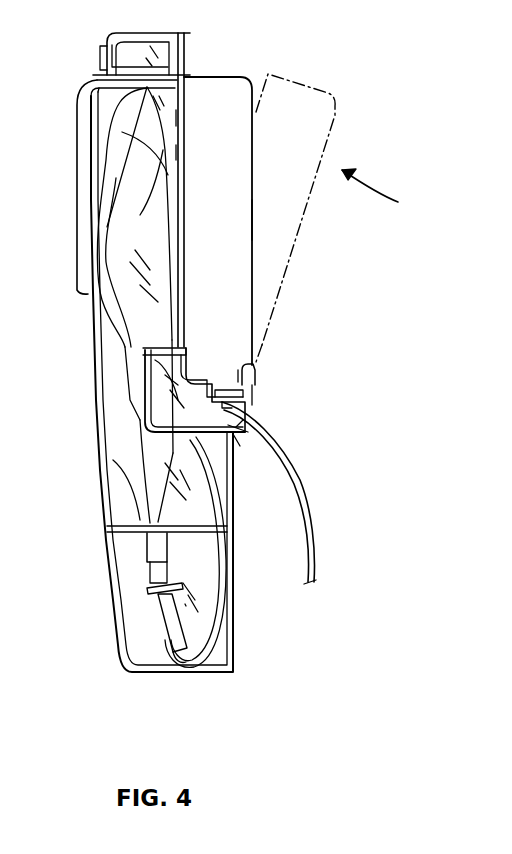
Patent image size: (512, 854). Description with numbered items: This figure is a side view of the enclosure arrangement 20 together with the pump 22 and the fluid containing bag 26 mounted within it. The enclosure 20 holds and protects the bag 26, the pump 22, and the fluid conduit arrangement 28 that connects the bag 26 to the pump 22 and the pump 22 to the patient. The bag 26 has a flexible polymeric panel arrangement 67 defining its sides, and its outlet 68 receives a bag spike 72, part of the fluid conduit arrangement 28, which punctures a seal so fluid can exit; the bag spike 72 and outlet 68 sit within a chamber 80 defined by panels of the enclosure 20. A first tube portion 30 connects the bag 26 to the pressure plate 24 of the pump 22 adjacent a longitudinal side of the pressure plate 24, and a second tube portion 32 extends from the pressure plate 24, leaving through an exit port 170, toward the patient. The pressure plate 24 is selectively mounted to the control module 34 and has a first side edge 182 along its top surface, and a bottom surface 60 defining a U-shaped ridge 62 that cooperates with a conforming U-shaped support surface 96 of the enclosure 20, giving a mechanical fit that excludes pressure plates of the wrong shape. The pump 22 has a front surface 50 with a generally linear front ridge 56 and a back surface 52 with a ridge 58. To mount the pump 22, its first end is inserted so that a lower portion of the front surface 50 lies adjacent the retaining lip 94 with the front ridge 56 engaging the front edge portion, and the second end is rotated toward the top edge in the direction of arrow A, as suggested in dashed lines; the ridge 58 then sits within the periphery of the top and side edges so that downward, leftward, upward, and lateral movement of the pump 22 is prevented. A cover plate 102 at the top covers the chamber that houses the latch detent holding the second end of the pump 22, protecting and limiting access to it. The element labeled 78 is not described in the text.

The enclosure arrangement 20 is at (232, 672).
The pump 22 is at (236, 78).
The pressure plate 24 is at (258, 340).
The fluid containing bag 26 is at (130, 502).
The fluid conduit arrangement 28 is at (200, 665).
The first tube portion 30 is at (210, 498).
The second tube portion 32 is at (262, 448).
The control module 34 is at (252, 220).
The front surface 50 is at (252, 146).
The back surface 52 is at (166, 118).
The front ridge 56 is at (257, 372).
The ridge 58 is at (166, 152).
The bottom surface 60 is at (238, 446).
The U-shaped ridge 62 is at (170, 463).
The flexible polymeric panel arrangement 67 is at (112, 165).
The outlet 68 is at (148, 542).
The bag spike 72 is at (162, 616).
The outer flange 78 is at (108, 90).
The chamber 80 is at (150, 590).
The retaining lip 94 is at (262, 405).
The U-shaped support surface 96 is at (248, 428).
The cover plate 102 is at (192, 48).
The exit port 170 is at (201, 385).
The first side edge 182 is at (145, 350).
The arrow A is at (384, 190).